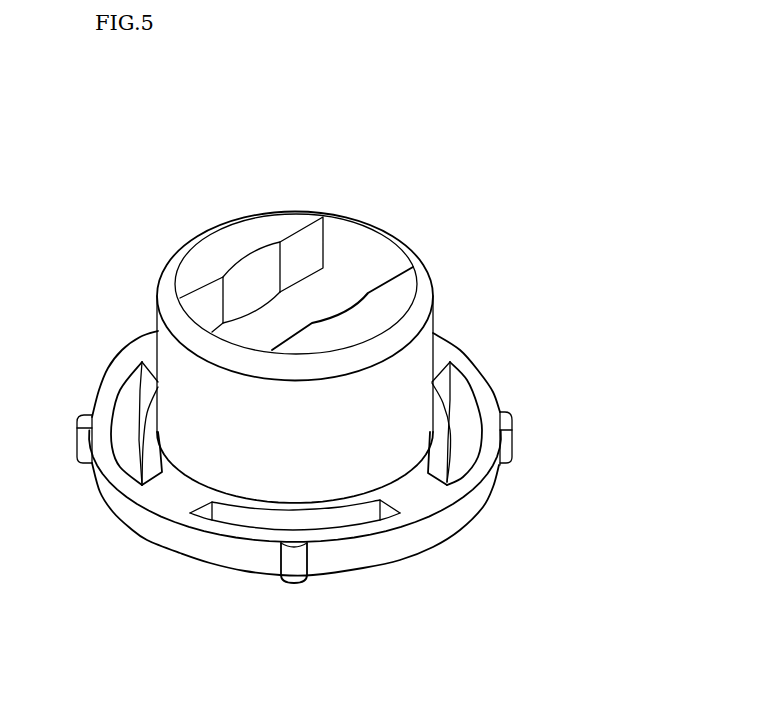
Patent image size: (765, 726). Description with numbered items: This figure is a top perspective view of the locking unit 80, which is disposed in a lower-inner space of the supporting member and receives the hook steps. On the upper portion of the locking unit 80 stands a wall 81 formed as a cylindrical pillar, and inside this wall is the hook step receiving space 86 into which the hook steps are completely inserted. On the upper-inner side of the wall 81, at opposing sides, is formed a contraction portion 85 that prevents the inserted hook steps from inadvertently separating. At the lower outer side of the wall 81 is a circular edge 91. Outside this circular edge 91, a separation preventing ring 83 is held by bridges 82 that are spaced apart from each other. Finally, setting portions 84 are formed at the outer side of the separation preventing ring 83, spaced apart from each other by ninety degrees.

The locking unit 80 is at (461, 229).
The wall 81 is at (177, 395).
The bridges 82 is at (417, 494).
The separation preventing ring 83 is at (340, 558).
The setting portions 84 is at (514, 440).
The contraction portion 85 is at (240, 240).
The hook step receiving space 86 is at (300, 295).
The circular edge 91 is at (438, 423).